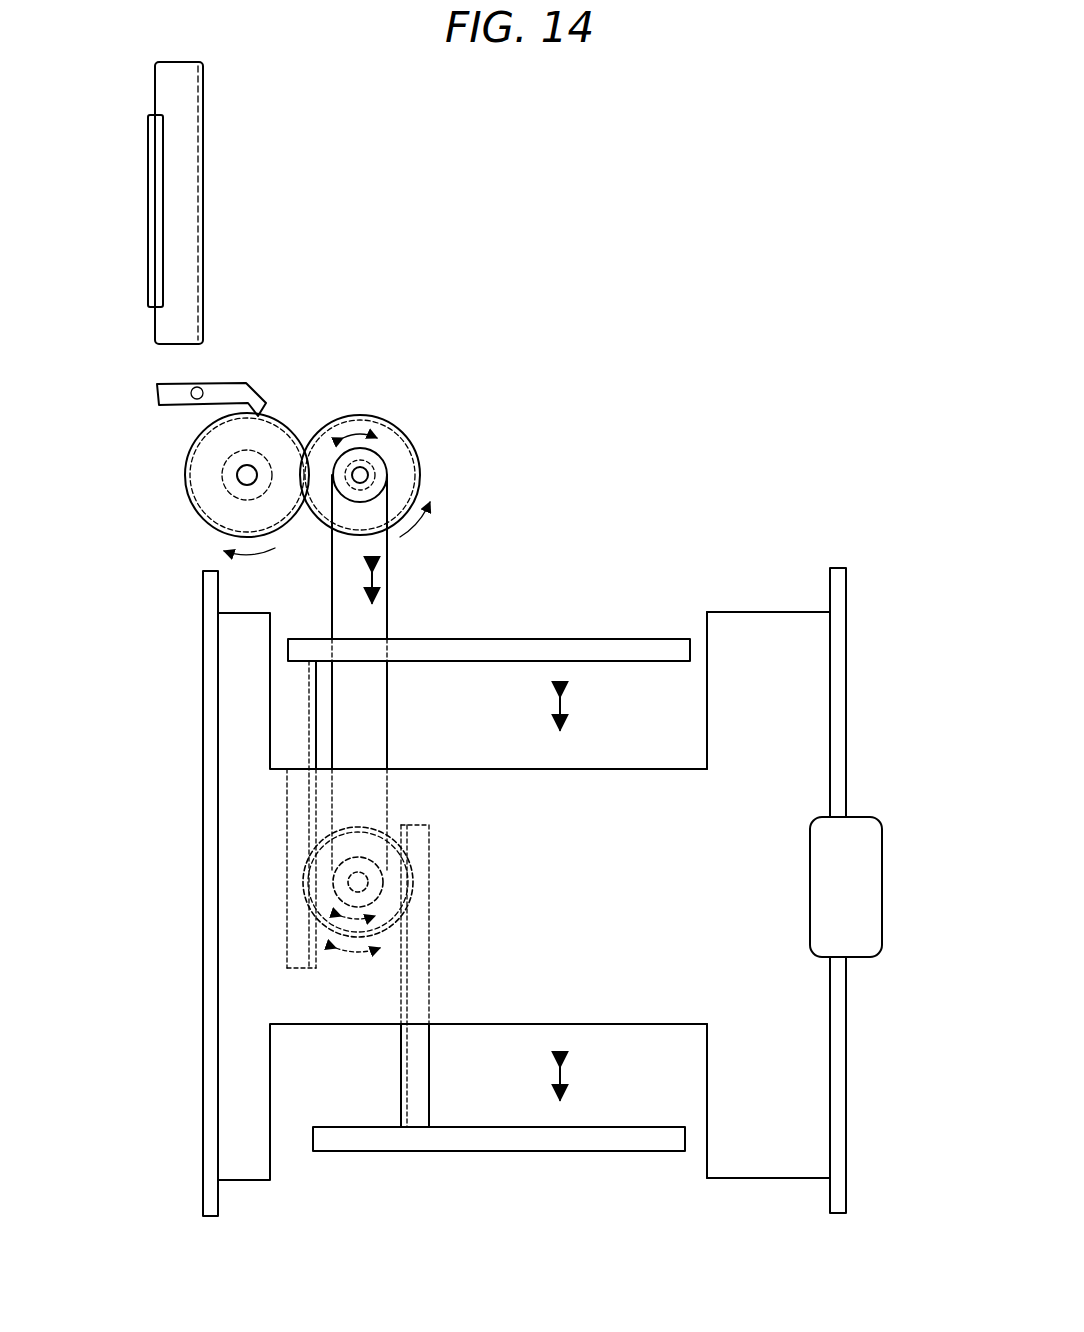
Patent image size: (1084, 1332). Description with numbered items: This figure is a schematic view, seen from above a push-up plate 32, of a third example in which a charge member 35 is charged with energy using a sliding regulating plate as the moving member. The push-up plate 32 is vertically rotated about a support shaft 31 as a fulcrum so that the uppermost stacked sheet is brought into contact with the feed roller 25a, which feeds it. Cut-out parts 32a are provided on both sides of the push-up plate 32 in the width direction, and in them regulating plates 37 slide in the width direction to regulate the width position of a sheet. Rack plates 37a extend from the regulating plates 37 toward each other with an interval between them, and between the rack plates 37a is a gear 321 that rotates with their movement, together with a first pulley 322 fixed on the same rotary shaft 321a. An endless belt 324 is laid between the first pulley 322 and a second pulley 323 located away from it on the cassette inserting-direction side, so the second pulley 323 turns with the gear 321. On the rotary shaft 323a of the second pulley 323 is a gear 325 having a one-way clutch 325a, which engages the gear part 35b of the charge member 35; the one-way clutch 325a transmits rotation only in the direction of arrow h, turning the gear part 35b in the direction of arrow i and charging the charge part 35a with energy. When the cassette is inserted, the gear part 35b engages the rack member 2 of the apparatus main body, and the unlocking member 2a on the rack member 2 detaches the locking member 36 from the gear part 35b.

The rack member 2 is at (175, 97).
The unlocking member 2a is at (150, 205).
The feed roller 25a is at (858, 832).
The support shaft 31 is at (203, 962).
The push-up plate 32 is at (780, 1148).
The cut-out parts 32a is at (707, 625).
The charge member 35 is at (180, 458).
The charge part 35a is at (215, 478).
The gear part 35b is at (192, 510).
The locking member 36 is at (158, 386).
The regulating plates 37 is at (520, 637).
The rack plates 37a is at (305, 698).
The gear 321 is at (400, 927).
The rotary shaft 321a is at (370, 882).
The first pulley 322 is at (378, 850).
The second pulley 323 is at (380, 456).
The rotary shaft 323a is at (366, 474).
The endless belt 324 is at (387, 618).
The gear 325 is at (372, 416).
The one-way clutch 325a is at (333, 468).